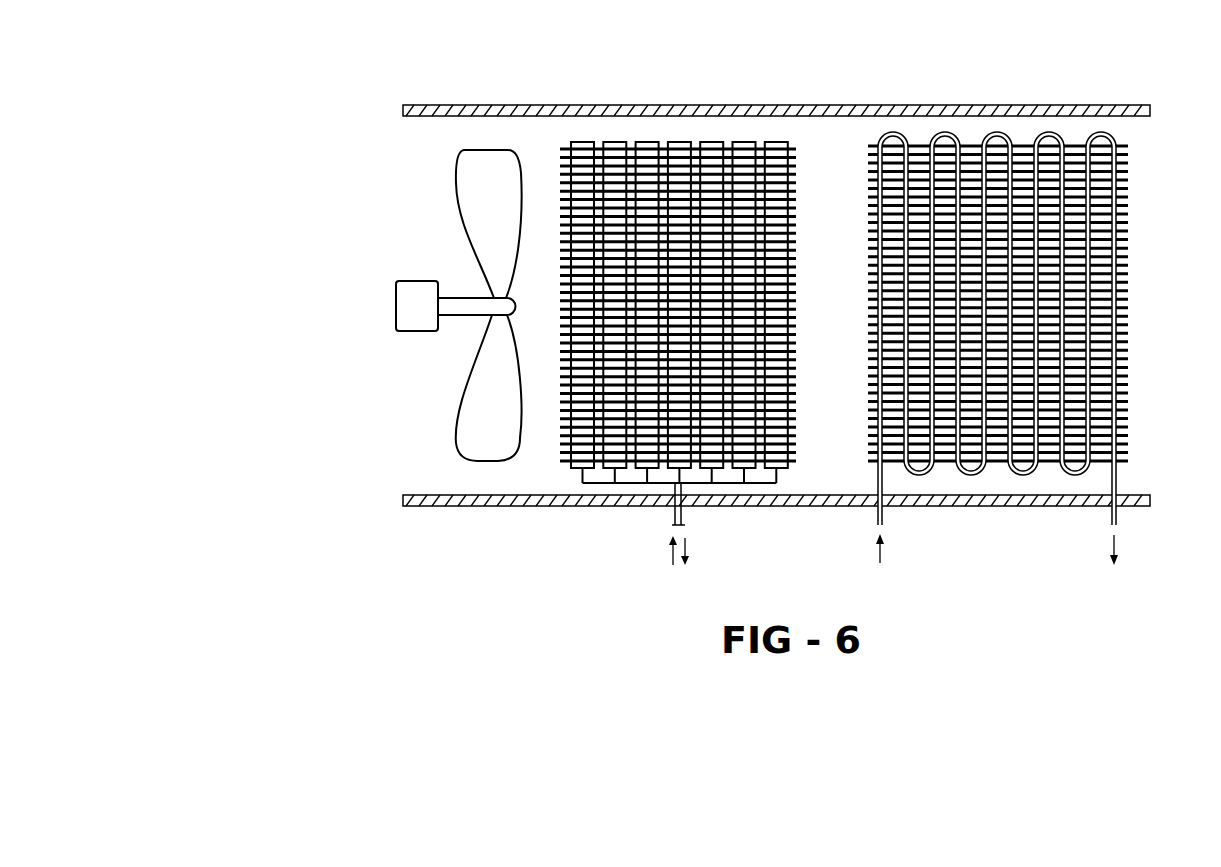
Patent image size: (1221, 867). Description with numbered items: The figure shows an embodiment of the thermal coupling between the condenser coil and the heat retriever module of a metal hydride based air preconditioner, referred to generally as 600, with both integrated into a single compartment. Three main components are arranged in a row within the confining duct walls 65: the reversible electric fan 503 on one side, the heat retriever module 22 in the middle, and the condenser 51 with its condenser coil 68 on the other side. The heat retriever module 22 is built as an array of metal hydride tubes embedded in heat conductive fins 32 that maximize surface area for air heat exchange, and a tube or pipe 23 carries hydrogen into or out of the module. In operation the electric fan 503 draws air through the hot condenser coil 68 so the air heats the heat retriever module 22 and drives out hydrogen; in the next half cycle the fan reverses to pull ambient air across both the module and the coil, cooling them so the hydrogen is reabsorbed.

The thermal coupling between condenser coil and heat retriever module 600 is at (322, 108).
The duct wall 65 is at (556, 104).
The electric fan 503 is at (486, 163).
The heat retriever module 22 is at (673, 195).
The heat conductive fins 32 is at (781, 226).
The tube or pipe 23 is at (666, 516).
The condenser 51 is at (1125, 414).
The condenser coil 68 is at (1012, 467).